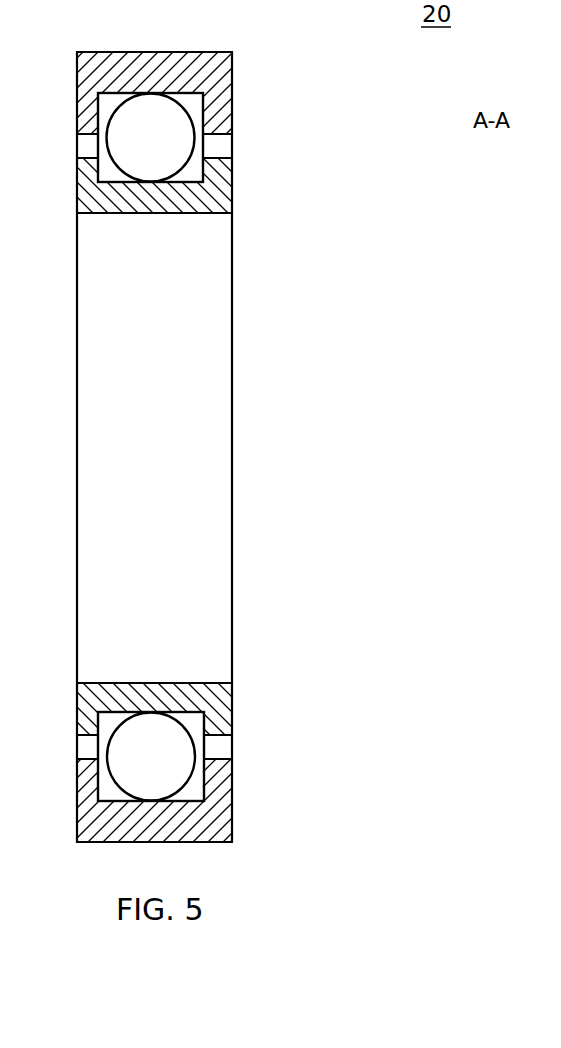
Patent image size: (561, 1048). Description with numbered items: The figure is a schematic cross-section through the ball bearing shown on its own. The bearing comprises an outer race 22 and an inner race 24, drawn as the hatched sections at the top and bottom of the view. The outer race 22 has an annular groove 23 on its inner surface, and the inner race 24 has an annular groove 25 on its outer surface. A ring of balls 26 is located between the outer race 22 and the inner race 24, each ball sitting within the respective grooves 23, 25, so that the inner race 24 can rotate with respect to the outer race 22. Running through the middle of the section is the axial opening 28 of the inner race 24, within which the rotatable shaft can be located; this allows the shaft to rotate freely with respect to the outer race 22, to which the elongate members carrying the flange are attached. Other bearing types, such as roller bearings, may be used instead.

The outer race 22 is at (213, 73).
The annular groove 23 is at (205, 105).
The inner race 24 is at (219, 187).
The annular groove 25 is at (205, 165).
The balls 26 is at (130, 135).
The axial opening 28 is at (190, 470).